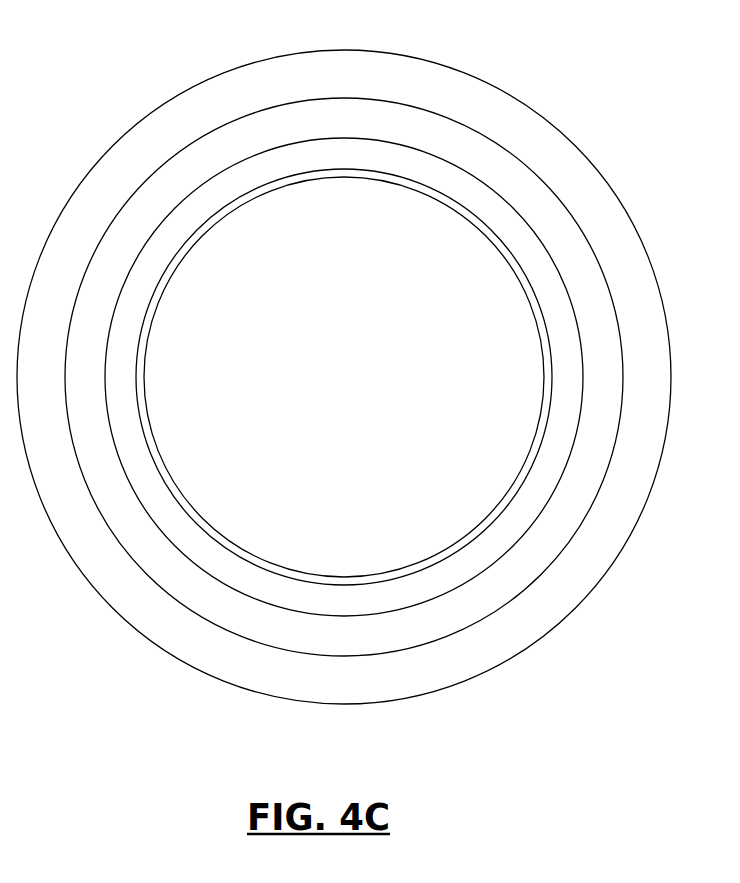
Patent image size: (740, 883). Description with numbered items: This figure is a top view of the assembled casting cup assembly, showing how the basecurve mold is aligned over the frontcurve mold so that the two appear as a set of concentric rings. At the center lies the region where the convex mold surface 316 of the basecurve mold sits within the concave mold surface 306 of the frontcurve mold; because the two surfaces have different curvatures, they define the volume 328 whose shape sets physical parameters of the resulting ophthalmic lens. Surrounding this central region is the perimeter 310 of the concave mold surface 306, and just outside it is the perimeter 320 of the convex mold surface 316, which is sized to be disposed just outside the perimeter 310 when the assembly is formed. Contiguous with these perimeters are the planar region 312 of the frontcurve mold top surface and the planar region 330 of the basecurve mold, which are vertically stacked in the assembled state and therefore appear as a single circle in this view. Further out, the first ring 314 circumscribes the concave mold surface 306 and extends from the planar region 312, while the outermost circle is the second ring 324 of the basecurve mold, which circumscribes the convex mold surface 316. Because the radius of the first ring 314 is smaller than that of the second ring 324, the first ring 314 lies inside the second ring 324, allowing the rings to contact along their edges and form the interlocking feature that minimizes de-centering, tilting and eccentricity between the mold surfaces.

The second ring 324 is at (509, 127).
The first ring 314 is at (526, 197).
The planar region 312 is at (397, 369).
The planar region 330 is at (526, 269).
The perimeter 320 is at (537, 300).
The perimeter 310 is at (472, 222).
The convex mold surface 316 is at (343, 376).
The volume 328 is at (343, 376).
The concave mold surface 306 is at (400, 386).